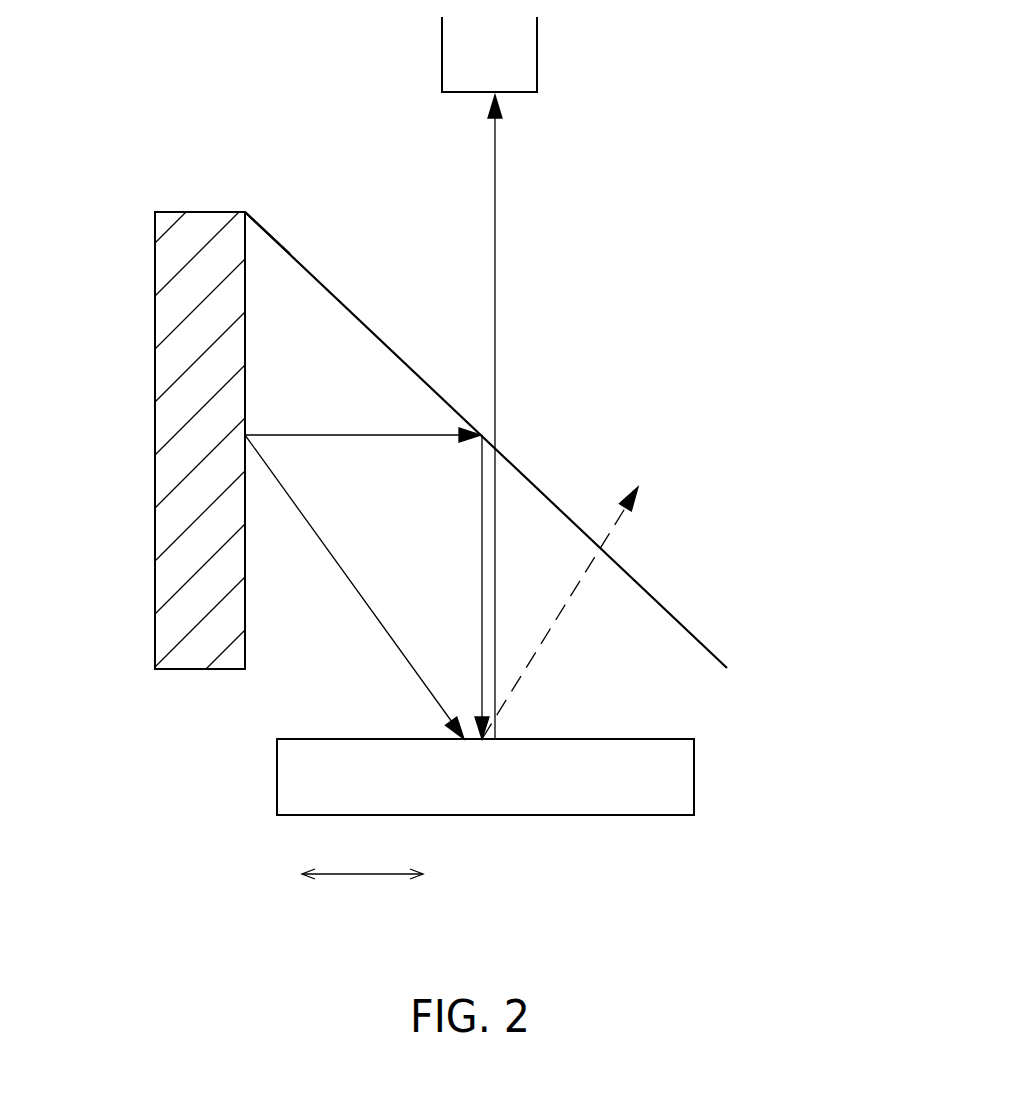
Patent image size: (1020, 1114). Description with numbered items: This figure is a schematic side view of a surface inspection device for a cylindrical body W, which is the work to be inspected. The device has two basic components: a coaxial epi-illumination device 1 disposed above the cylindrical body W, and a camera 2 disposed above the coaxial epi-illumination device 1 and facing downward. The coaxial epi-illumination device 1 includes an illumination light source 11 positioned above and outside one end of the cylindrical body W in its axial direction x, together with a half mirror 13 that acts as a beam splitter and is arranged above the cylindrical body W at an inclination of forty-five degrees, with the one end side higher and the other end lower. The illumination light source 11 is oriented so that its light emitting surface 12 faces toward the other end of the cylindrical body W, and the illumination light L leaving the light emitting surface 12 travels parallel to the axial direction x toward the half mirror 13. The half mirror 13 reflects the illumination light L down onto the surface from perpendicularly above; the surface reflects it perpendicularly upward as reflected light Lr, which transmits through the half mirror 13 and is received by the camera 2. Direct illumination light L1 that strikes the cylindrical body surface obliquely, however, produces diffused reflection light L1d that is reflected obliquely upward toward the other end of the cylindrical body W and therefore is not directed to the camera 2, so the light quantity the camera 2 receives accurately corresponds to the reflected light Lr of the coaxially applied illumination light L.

The coaxial epi-illumination device 1 is at (717, 542).
The camera 2 is at (522, 55).
The illumination light source 11 is at (167, 574).
The light emitting surface 12 is at (247, 295).
The half mirror 13 is at (528, 478).
The illumination light L is at (330, 430).
The reflected light Lr is at (495, 255).
The direct illumination light L1 is at (347, 580).
The diffused reflection light L1d is at (542, 627).
The cylindrical body W is at (627, 800).
The axial direction x is at (362, 859).